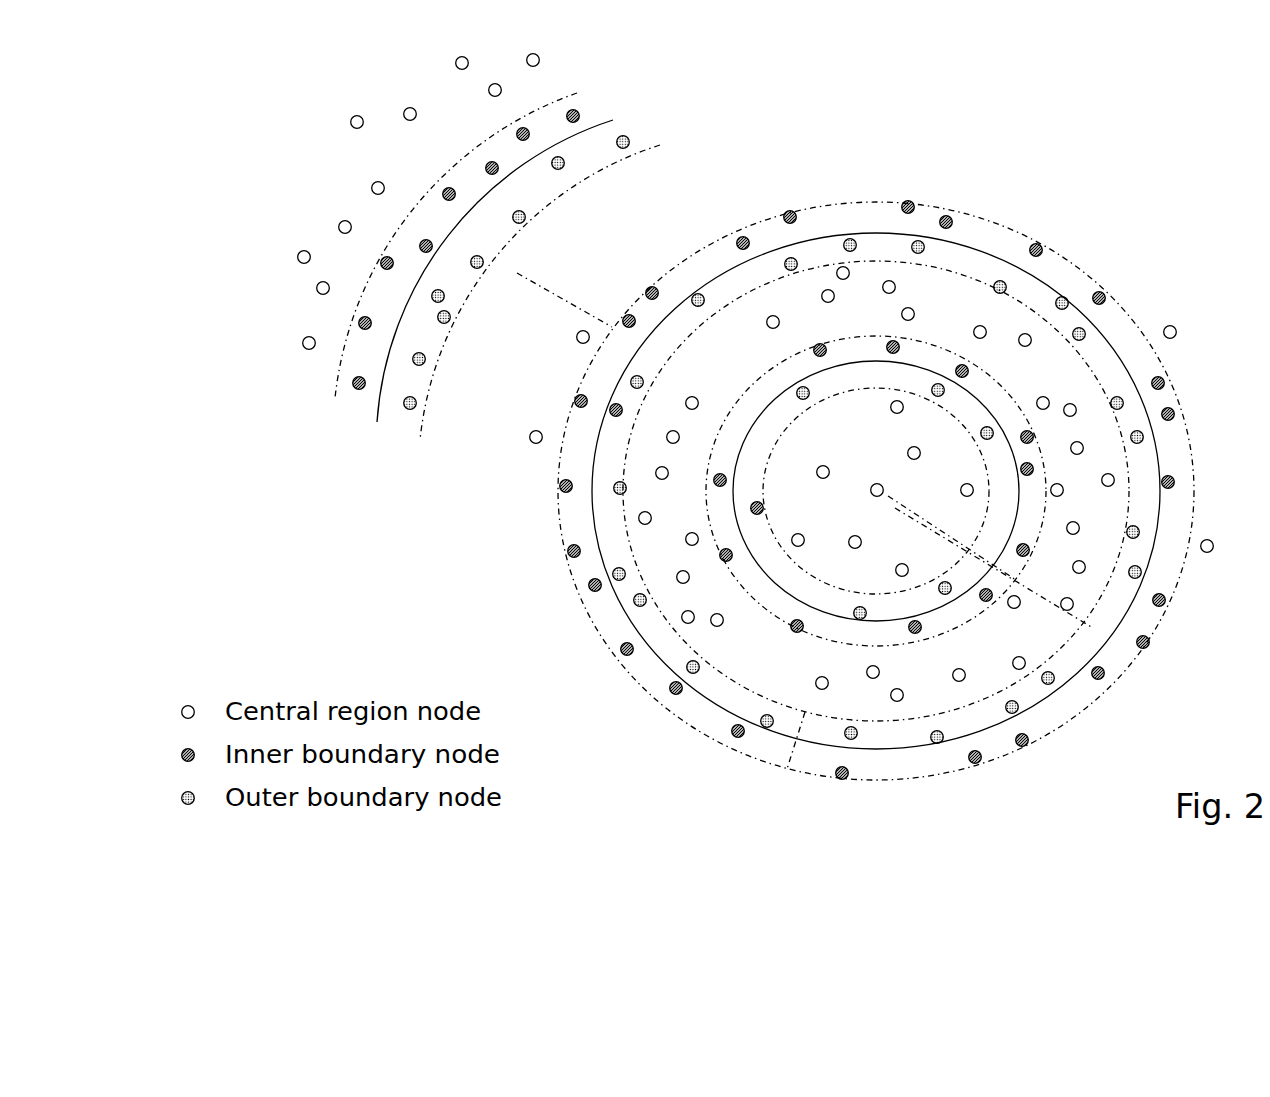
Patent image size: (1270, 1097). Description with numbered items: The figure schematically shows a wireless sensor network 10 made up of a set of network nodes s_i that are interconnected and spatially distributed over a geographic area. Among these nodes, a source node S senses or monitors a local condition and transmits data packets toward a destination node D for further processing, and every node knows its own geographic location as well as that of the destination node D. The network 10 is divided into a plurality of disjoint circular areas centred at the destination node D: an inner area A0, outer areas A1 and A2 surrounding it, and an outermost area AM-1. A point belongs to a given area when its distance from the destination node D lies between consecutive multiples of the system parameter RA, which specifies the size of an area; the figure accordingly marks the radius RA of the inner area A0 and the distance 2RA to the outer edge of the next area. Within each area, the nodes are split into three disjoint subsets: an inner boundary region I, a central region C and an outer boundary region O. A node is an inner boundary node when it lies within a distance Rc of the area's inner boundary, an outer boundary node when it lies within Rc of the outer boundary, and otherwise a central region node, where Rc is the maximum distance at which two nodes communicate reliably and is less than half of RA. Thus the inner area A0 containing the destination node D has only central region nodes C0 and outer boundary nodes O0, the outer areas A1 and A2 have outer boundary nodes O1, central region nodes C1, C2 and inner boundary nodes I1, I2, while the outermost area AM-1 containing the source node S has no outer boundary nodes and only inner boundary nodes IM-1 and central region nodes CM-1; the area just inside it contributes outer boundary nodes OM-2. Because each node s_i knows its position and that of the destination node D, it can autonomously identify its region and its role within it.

The wireless sensor network 10 is at (1190, 226).
The destination node D is at (864, 505).
The inner area A0 is at (876, 491).
The outer area A1 is at (899, 491).
The outer area A2 is at (564, 298).
The outermost area AM-1 is at (453, 100).
The central region nodes C0 is at (850, 546).
The central region nodes C1 is at (965, 305).
The central region nodes C2 is at (575, 341).
The central region nodes CM-1 is at (540, 61).
The central region C is at (307, 303).
The inner boundary region I is at (762, 227).
The outer boundary region O is at (957, 257).
The inner boundary nodes I1 is at (915, 634).
The inner boundary nodes I2 is at (791, 211).
The inner boundary nodes IM-1 is at (580, 110).
The outer boundary nodes O0 is at (856, 618).
The outer boundary nodes O1 is at (852, 238).
The outer boundary nodes OM-2 is at (632, 139).
The source node S is at (420, 280).
The network node Si is at (1143, 572).
The area size parameter RA is at (952, 534).
The twice the area size parameter 2RA is at (994, 568).
The communication range parameter Rc is at (807, 744).